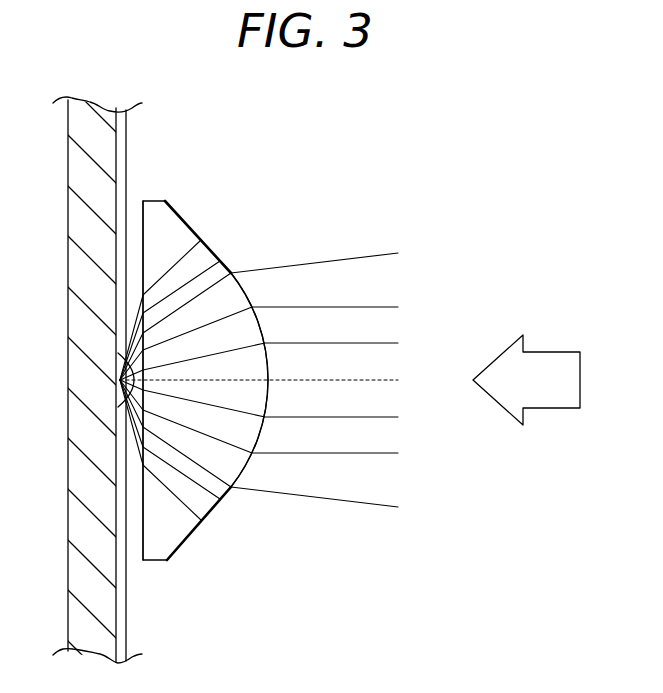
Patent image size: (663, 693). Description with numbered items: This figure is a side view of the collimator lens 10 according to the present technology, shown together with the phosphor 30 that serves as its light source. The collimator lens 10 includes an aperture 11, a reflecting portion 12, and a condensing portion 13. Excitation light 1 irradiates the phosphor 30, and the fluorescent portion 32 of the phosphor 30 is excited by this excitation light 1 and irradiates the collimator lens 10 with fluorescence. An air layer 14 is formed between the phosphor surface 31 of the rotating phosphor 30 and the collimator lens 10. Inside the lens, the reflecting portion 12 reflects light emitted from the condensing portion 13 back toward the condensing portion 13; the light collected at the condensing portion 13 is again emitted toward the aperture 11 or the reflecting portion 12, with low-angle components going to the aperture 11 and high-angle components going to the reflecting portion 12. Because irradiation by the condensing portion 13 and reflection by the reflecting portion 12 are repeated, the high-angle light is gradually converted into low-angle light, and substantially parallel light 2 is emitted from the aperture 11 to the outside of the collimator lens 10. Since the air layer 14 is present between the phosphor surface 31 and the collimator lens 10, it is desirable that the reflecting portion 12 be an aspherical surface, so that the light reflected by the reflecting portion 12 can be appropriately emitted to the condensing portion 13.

The excitation light 1 is at (553, 350).
The substantially parallel light 2 is at (366, 256).
The collimator lens 10 is at (259, 357).
The aperture 11 is at (270, 362).
The reflecting portion 12 is at (198, 238).
The condensing portion 13 is at (150, 396).
The air layer 14 is at (133, 538).
The phosphor 30 is at (141, 386).
The phosphor surface 31 is at (119, 128).
The fluorescent portion 32 is at (100, 155).